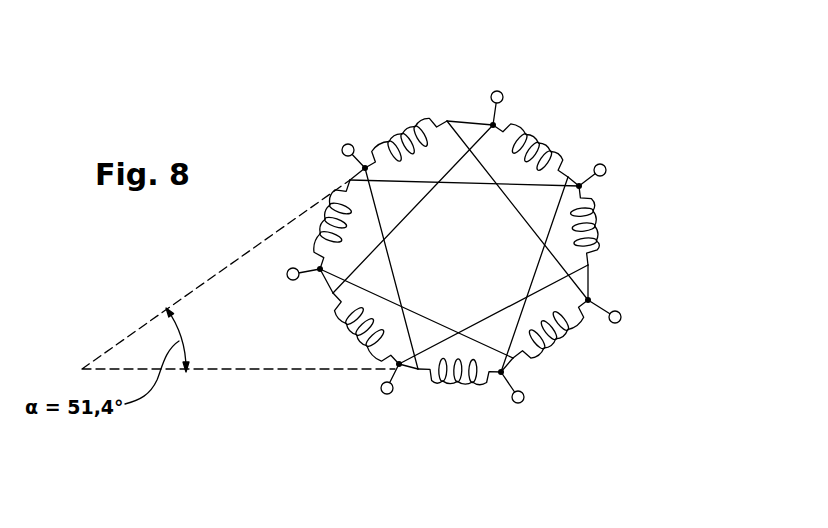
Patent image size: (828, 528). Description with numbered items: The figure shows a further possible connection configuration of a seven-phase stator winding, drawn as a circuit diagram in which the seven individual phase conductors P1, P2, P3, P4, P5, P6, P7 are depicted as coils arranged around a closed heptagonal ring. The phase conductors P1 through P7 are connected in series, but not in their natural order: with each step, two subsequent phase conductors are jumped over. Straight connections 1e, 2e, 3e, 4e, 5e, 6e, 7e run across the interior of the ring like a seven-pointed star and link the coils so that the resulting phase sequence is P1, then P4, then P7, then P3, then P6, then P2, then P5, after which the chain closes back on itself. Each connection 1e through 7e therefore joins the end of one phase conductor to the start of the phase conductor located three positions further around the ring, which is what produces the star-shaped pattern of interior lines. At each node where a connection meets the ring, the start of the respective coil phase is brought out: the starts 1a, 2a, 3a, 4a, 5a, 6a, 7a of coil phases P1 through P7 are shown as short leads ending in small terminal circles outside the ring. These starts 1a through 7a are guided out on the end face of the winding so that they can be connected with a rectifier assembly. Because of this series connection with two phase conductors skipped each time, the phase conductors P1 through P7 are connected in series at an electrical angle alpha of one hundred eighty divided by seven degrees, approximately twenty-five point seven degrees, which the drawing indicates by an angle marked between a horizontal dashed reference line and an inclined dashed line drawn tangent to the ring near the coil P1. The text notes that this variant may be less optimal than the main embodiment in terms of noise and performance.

The start of coil phase P1 1a is at (290, 280).
The start of coil phase P2 2a is at (343, 146).
The start of coil phase P3 3a is at (497, 91).
The start of coil phase P4 4a is at (606, 167).
The start of coil phase P5 5a is at (621, 319).
The start of coil phase P6 6a is at (523, 402).
The start of coil phase P7 7a is at (382, 392).
The phase conductor P1 is at (320, 240).
The phase conductor P2 is at (395, 130).
The phase conductor P3 is at (537, 130).
The phase conductor P4 is at (598, 222).
The phase conductor P5 is at (567, 335).
The phase conductor P6 is at (461, 385).
The phase conductor P7 is at (362, 344).
The connection 1e is at (467, 188).
The connection 2e is at (511, 203).
The connection 3e is at (537, 267).
The connection 4e is at (503, 307).
The connection 5e is at (434, 317).
The connection 6e is at (394, 263).
The connection 7e is at (404, 222).